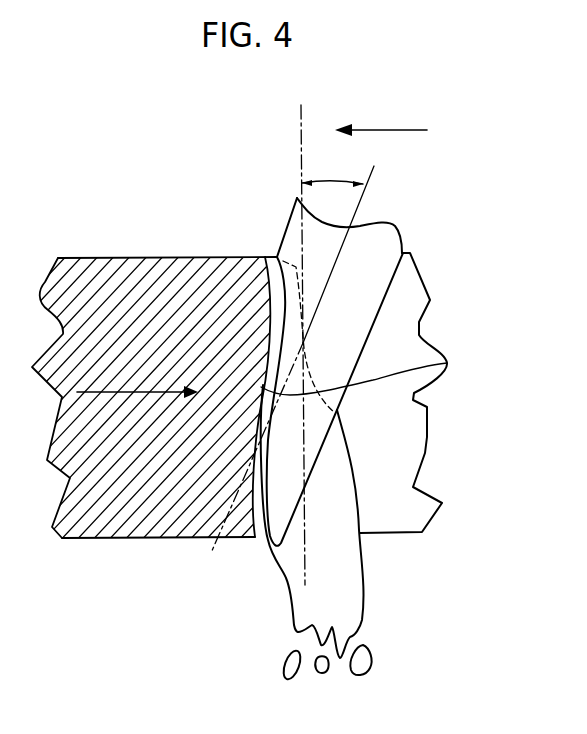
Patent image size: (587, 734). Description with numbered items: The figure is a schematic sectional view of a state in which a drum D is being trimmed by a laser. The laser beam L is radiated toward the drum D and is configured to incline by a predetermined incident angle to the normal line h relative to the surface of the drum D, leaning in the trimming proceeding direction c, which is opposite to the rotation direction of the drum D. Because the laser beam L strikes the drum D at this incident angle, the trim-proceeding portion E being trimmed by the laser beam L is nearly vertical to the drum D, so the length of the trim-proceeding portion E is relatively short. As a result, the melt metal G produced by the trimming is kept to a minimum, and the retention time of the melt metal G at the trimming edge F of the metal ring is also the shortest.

The drum D is at (138, 257).
The normal line h is at (297, 330).
The trimming proceeding direction c is at (381, 120).
The laser beam L is at (357, 322).
The trim-proceeding portion E is at (447, 363).
The trimming edge F is at (397, 436).
The melt metal G is at (343, 580).